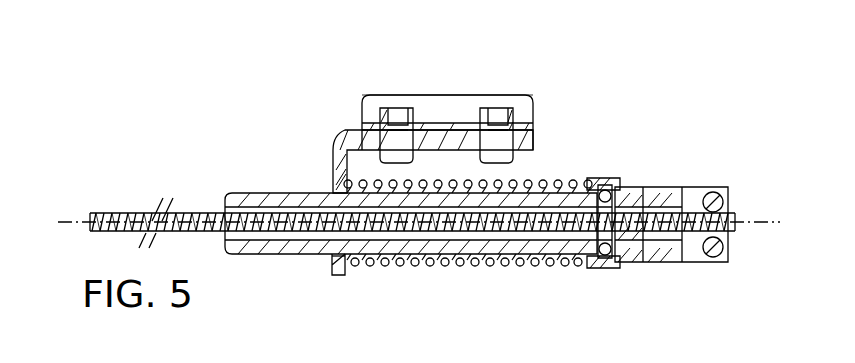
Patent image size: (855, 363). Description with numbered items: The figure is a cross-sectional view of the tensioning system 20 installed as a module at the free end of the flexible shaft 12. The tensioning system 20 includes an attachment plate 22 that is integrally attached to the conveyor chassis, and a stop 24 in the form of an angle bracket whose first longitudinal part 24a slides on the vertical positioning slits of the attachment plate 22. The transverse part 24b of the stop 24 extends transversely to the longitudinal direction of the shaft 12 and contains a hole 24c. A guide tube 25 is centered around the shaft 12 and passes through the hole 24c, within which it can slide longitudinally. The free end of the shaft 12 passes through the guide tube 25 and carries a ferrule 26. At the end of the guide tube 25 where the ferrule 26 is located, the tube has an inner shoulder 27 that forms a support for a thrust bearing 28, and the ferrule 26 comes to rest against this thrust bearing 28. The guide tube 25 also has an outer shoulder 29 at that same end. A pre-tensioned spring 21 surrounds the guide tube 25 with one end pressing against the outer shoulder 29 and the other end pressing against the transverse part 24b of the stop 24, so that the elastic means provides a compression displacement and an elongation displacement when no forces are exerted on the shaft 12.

The flexible shaft 12 is at (107, 217).
The tensioning system 20 is at (353, 88).
The pre-tensioned spring 21 is at (482, 262).
The attachment plate 22 is at (461, 98).
The stop 24 is at (343, 142).
The first longitudinal part 24a is at (533, 153).
The transverse part 24b is at (338, 274).
The hole 24c is at (332, 263).
The guide tube 25 is at (265, 193).
The ferrule 26 is at (709, 187).
The inner shoulder 27 is at (580, 185).
The thrust bearing 28 is at (607, 262).
The outer shoulder 29 is at (586, 262).